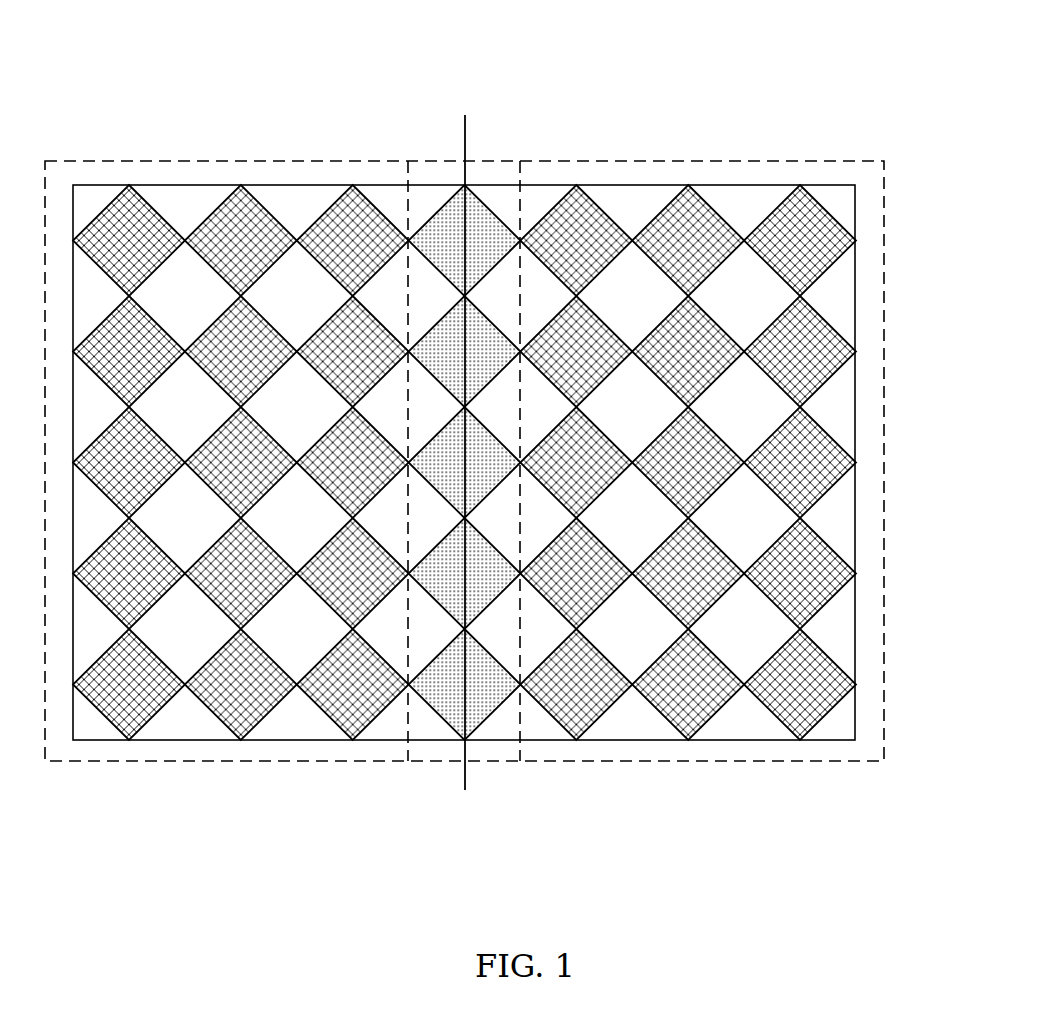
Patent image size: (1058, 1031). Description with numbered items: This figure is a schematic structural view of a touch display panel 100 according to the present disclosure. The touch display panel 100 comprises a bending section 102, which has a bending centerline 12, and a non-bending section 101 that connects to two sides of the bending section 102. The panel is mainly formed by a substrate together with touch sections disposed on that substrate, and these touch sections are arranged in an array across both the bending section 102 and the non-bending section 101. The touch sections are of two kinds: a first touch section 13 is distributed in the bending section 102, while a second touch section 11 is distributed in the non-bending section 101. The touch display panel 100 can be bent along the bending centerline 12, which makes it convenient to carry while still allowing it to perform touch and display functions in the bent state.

The touch display panel 100 is at (420, 90).
The non-bending section 101 is at (76, 172).
The bending section 102 is at (501, 172).
The second touch section 11 is at (685, 255).
The first touch section 13 is at (477, 686).
The bending centerline 12 is at (465, 790).